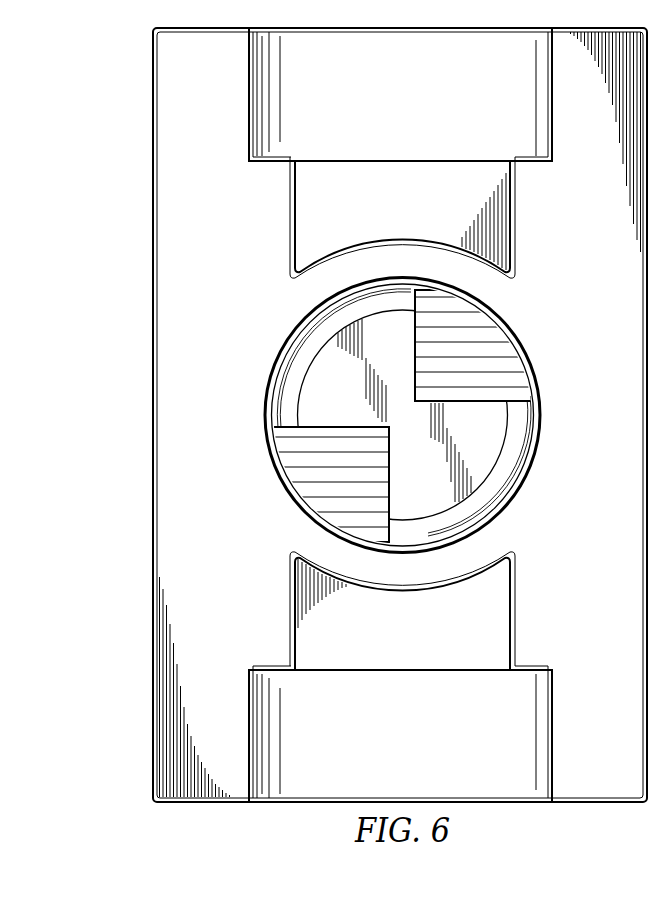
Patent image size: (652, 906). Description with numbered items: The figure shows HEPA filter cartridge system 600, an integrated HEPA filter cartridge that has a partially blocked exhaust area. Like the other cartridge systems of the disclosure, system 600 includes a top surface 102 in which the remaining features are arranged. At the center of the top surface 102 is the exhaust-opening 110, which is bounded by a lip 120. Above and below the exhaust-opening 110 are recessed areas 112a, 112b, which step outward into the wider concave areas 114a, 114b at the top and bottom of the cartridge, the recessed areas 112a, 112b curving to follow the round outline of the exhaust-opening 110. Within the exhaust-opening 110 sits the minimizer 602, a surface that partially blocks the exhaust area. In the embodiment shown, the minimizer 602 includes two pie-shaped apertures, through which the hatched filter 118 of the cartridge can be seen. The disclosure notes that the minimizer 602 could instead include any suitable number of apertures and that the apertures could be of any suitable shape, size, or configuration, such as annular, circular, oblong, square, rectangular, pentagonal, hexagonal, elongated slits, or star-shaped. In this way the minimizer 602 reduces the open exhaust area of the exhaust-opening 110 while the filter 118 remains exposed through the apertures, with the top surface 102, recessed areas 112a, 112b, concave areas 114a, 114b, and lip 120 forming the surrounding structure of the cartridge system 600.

The HEPA filter cartridge system 600 is at (136, 317).
The top surface 102 is at (610, 518).
The concave area 114b is at (426, 110).
The recessed area 112b is at (426, 209).
The recessed area 112a is at (426, 646).
The concave area 114a is at (426, 742).
The exhaust-opening 110 is at (529, 353).
The lip 120 is at (535, 393).
The minimizer 602 is at (433, 482).
The filter 118 is at (343, 452).